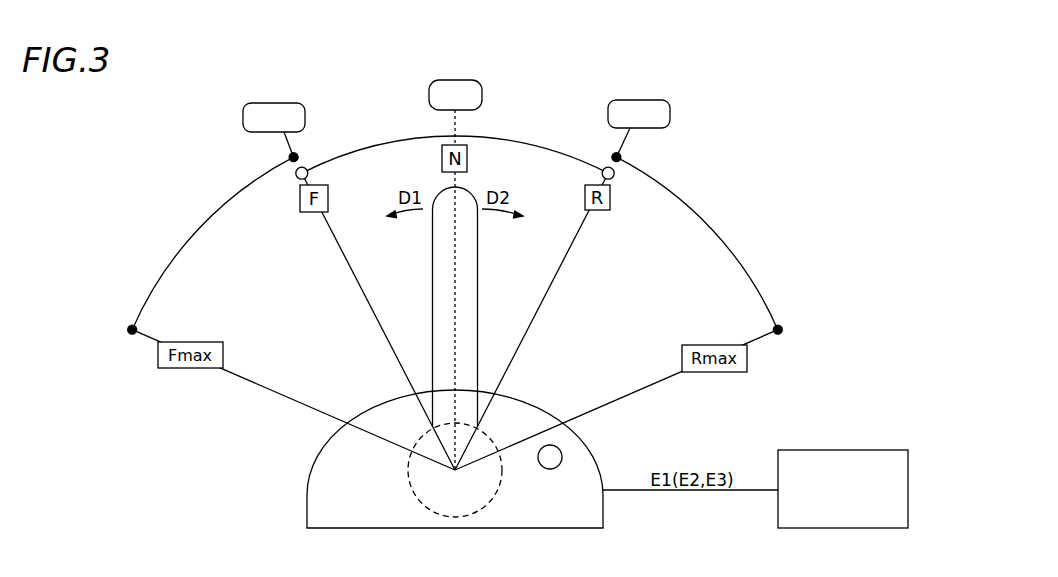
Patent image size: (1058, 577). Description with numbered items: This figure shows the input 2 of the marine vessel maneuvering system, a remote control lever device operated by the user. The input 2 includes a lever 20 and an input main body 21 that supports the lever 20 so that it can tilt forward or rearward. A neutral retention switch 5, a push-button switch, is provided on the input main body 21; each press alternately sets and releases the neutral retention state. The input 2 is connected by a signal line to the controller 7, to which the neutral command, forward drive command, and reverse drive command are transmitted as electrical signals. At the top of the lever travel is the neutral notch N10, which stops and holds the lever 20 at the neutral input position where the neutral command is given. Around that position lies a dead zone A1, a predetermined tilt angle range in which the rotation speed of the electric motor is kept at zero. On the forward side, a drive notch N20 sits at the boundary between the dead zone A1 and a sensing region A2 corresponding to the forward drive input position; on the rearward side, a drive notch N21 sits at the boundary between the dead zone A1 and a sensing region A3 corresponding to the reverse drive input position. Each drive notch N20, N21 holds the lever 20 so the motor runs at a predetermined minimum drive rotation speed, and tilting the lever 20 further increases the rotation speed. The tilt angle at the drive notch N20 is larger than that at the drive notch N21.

The input 2 is at (435, 459).
The neutral retention switch 5 is at (563, 455).
The controller 7 is at (909, 466).
The lever 20 is at (433, 275).
The input main body 21 is at (309, 498).
The neutral notch N10 is at (455, 80).
The drive notch N20 is at (267, 102).
The drive notch N21 is at (643, 100).
The dead zone A1 is at (400, 133).
The sensing region A2 is at (212, 212).
The sensing region A3 is at (700, 217).